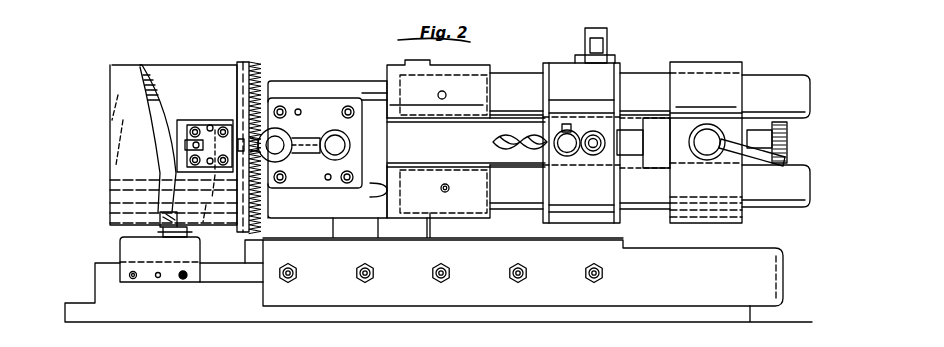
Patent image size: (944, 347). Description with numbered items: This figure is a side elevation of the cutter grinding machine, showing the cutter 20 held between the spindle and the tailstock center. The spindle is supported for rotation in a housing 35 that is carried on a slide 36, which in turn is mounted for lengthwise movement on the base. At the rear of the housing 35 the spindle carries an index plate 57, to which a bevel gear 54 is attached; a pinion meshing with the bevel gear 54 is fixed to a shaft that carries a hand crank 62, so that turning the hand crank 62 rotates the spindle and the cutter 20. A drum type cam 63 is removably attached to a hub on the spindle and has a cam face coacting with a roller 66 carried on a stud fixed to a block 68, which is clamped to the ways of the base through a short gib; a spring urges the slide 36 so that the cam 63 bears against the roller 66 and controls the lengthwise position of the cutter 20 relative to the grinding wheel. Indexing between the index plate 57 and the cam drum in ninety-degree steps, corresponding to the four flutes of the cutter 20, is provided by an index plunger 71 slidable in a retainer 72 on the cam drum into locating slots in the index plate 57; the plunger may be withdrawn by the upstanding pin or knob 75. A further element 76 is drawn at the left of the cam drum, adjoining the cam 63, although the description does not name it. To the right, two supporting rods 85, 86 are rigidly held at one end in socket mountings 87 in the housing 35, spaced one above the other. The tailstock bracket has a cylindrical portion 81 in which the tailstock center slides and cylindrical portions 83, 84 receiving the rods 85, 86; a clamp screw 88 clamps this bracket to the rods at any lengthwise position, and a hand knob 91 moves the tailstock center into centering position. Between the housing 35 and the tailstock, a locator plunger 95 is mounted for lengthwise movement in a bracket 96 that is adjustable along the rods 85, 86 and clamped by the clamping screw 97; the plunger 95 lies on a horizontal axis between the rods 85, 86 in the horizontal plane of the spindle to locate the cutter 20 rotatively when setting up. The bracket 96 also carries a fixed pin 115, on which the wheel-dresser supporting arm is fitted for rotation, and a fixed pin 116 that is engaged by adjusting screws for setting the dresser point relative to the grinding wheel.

The cutter 20 is at (493, 145).
The housing 35 is at (342, 83).
The slide 36 is at (493, 290).
The bevel gear 54 is at (258, 58).
The index plate 57 is at (241, 60).
The hand crank 62 is at (306, 140).
The drum type cam 63 is at (173, 73).
The roller 66 is at (160, 227).
The block 68 is at (123, 248).
The index plunger 71 is at (237, 146).
The retainer 72 is at (187, 120).
The upstanding pin or knob 75 is at (185, 146).
The curved blade 76 is at (142, 70).
The cylindrical portion 81 is at (656, 145).
The cylindrical portion 83 is at (717, 68).
The cylindrical portion 84 is at (740, 220).
The supporting rod 85 is at (780, 78).
The supporting rod 86 is at (797, 173).
The socket mountings 87 is at (473, 70).
The clamp screw 88 is at (708, 160).
The hand knob 91 is at (788, 137).
The plunger 95 is at (567, 154).
The bracket 96 is at (557, 80).
The clamping screw 97 is at (594, 154).
The pin 115 is at (597, 30).
The pin 116 is at (607, 42).